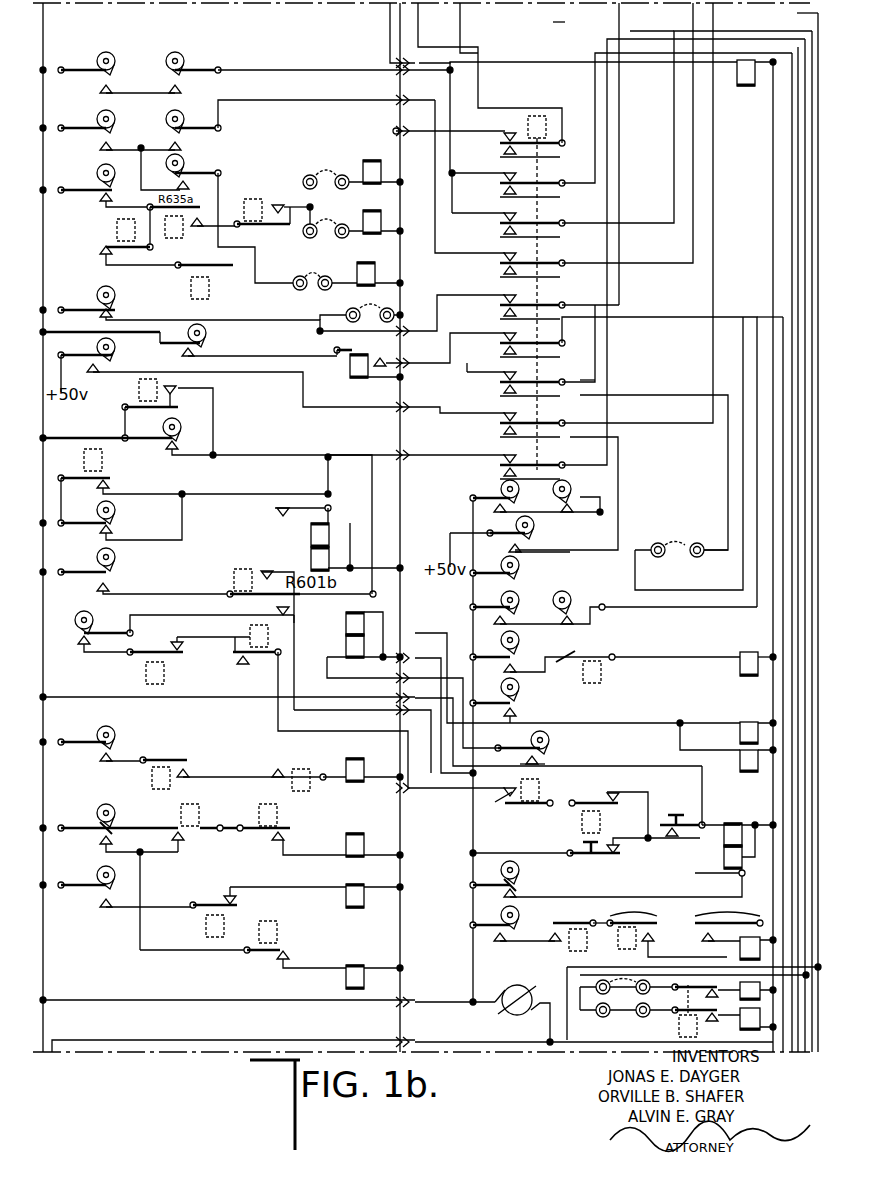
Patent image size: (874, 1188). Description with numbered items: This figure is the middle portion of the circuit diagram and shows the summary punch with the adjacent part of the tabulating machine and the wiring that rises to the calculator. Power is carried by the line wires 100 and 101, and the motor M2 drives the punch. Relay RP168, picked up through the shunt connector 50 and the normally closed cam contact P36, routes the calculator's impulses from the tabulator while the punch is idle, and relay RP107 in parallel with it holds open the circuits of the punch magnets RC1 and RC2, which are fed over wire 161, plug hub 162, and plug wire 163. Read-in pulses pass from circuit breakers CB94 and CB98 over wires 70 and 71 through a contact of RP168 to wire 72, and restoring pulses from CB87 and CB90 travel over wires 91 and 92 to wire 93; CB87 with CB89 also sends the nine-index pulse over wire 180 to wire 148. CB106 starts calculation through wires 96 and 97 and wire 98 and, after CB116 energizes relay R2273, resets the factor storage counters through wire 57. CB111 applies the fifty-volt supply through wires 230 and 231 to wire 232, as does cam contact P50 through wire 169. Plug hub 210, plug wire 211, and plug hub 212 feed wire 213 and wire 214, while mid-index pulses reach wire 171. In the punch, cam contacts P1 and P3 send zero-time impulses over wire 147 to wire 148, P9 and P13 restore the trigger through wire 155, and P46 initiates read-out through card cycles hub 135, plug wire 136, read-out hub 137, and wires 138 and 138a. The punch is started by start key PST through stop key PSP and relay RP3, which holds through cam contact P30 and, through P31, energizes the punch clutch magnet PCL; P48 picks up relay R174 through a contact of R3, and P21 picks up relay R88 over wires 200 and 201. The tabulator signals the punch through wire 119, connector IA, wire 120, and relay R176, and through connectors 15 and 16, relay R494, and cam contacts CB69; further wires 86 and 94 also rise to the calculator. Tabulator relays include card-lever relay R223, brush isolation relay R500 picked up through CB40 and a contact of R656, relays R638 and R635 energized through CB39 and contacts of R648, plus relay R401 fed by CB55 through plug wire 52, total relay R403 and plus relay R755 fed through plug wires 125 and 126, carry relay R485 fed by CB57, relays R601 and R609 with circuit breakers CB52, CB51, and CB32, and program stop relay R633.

The wire 70 is at (292, 73).
The wire 91 is at (302, 104).
The wire 119 is at (388, 19).
The connection IA is at (418, 60).
The wire 120 is at (465, 55).
The wire 214 is at (460, 15).
The wire 57 is at (571, 18).
The conductor 86 is at (636, 33).
The wire 161 is at (797, 17).
The wire 71 is at (450, 73).
The wire 213 is at (393, 130).
The plug wire 125 is at (338, 172).
The plug wire 126 is at (334, 236).
The wire 92 is at (451, 185).
The wire 72 is at (674, 118).
The wire 171 is at (580, 178).
The conductor 94 is at (792, 152).
The line wire 101 is at (775, 195).
The wire 98 is at (620, 288).
The wire 93 is at (665, 265).
The plug wire 52 is at (298, 290).
The plug hub 210 is at (346, 312).
The plug wire 211 is at (383, 307).
The counter read out and reset plug hub 212 is at (454, 311).
The wire 96 is at (240, 330).
The wire 97 is at (452, 348).
The wire 231 is at (416, 379).
The wire 230 is at (392, 405).
The wire 180 is at (270, 455).
The wire 232 is at (665, 420).
The wire 148 is at (618, 445).
The wire 147 is at (605, 487).
The wire 138 is at (728, 475).
The wire 138a is at (598, 365).
The card cycles hub 135 is at (652, 543).
The plug wire 136 is at (668, 557).
The counter read out hub 137 is at (700, 537).
The wire 169 is at (615, 530).
The wire 155 is at (745, 607).
The shunt connector 50 is at (418, 648).
The wire 201 is at (335, 680).
The wire 200 is at (145, 700).
The connector 15 is at (362, 741).
The connector 16 is at (420, 790).
The line wire 100 is at (44, 995).
The plug hub 162 is at (595, 998).
The plug wire 163 is at (630, 998).
The motor M2 is at (505, 1012).
The relay R176 is at (740, 80).
The relay RP168 is at (526, 127).
The circuit breaker CB94 is at (99, 53).
The circuit breaker CB98 is at (190, 48).
The circuit breaker CB87 is at (97, 124).
The circuit breaker CB90 is at (168, 135).
The circuit breaker CB55 is at (100, 185).
The circuit breaker CB89 is at (182, 170).
The relay R648 is at (118, 234).
The relay R635 is at (190, 240).
The total relay R609 is at (253, 199).
The total relay R403 is at (358, 154).
The plus relay R755 is at (376, 210).
The plus relay R401 is at (357, 272).
The circuit breaker CB106 is at (104, 308).
The circuit breaker CB116 is at (133, 314).
The relay R638 is at (190, 288).
The circuit breaker CB111 is at (117, 355).
The circuit breaker CB32 is at (180, 440).
The program stop relay R633 is at (104, 462).
The circuit breaker CB51 is at (116, 526).
The circuit breaker CB52 is at (112, 574).
The relay R601 is at (236, 572).
The relay R2273 is at (350, 364).
The cam contact P1 is at (494, 490).
The cam contact P3 is at (568, 498).
The cam contact P50 is at (525, 550).
The cam contact P46 is at (522, 577).
The cam contact P9 is at (518, 618).
The cam contact P13 is at (585, 615).
The cam contact P31 is at (518, 658).
The cam contact P36 is at (520, 706).
The cam contact P21 is at (545, 756).
The cam contact P30 is at (522, 888).
The cam contact P48 is at (500, 930).
The relay RP3 is at (601, 675).
The punch clutch magnet PCL is at (740, 665).
The relay RP107 is at (740, 760).
The relay R88 is at (146, 676).
The relay R494 is at (250, 618).
The cam contacts CB69 is at (72, 622).
The circuit breaker CB40 is at (97, 740).
The relay R223 is at (152, 780).
The brush isolation relay R500 is at (375, 753).
The relay R656 is at (312, 785).
The circuit breaker CB39 is at (95, 824).
The circuit breaker CB57 is at (97, 882).
The carry relay R485 is at (372, 915).
The relay R174 is at (740, 950).
The relay R3 is at (633, 948).
The punch start key PST is at (690, 830).
The punch stop key PSP is at (585, 852).
The punch magnet RC1 is at (747, 991).
The punch magnet RC2 is at (747, 1019).